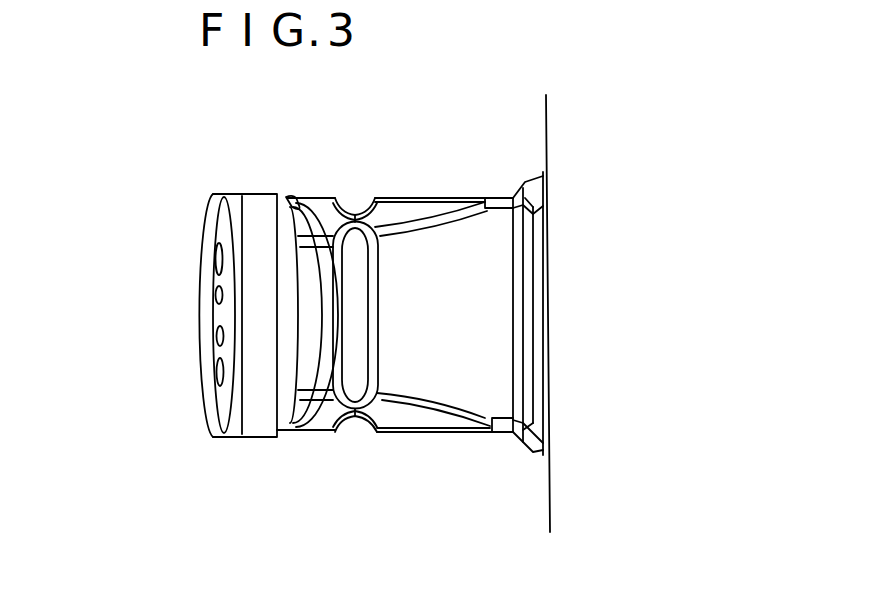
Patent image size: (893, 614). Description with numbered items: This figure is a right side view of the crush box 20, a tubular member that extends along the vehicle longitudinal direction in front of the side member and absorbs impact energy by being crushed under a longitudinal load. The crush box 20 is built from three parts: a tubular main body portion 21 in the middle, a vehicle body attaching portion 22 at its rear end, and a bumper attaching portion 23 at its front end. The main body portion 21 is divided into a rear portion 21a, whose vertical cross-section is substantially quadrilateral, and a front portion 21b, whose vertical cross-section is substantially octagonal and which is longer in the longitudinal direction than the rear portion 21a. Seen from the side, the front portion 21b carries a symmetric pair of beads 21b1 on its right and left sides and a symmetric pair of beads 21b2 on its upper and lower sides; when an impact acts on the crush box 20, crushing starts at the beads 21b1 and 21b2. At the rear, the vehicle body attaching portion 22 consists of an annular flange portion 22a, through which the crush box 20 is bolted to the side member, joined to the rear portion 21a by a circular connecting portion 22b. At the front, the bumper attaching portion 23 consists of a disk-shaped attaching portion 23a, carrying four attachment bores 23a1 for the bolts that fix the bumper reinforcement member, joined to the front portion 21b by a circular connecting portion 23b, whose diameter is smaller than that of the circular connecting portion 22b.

The crush box 20 is at (214, 193).
The main body portion 21 is at (418, 197).
The rear portion 21a is at (503, 434).
The front portion 21b is at (405, 434).
The beads 21b1 is at (363, 318).
The beads 21b2 is at (355, 208).
The vehicle body attaching portion 22 is at (530, 178).
The annular flange portion 22a is at (549, 525).
The circular connecting portion 22b is at (532, 448).
The bumper attaching portion 23 is at (288, 199).
The disk-shaped attaching portion 23a is at (212, 408).
The attachment bores 23a1 is at (214, 372).
The circular connecting portion 23b is at (245, 438).